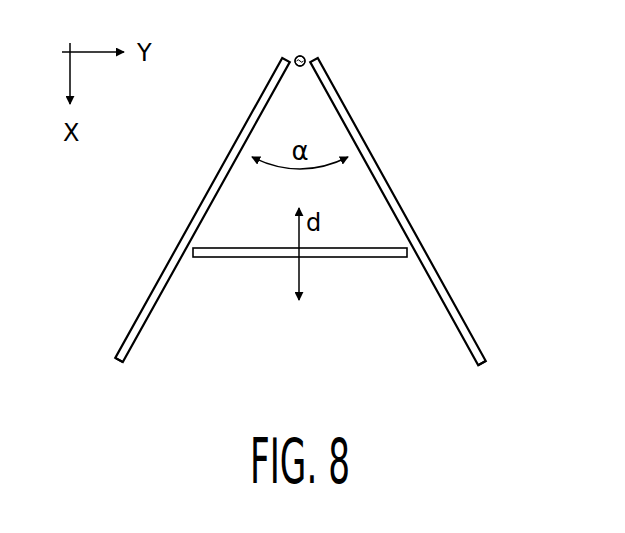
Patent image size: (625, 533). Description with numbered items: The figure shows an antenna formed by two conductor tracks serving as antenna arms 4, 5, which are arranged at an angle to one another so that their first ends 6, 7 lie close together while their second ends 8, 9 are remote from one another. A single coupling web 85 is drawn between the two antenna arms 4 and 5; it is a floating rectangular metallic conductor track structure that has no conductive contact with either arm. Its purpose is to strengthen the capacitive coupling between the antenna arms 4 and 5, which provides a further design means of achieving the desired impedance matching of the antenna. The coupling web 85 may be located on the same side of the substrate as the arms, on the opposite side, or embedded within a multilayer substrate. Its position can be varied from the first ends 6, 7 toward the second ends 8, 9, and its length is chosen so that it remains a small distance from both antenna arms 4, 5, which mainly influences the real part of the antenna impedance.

The antenna arm 4 is at (192, 221).
The antenna arm 5 is at (402, 210).
The first end of antenna arm 6 is at (295, 58).
The first end of antenna arm 7 is at (305, 58).
The second end of antenna arm 8 is at (116, 368).
The second end of antenna arm 9 is at (482, 367).
The coupling web 85 is at (244, 258).